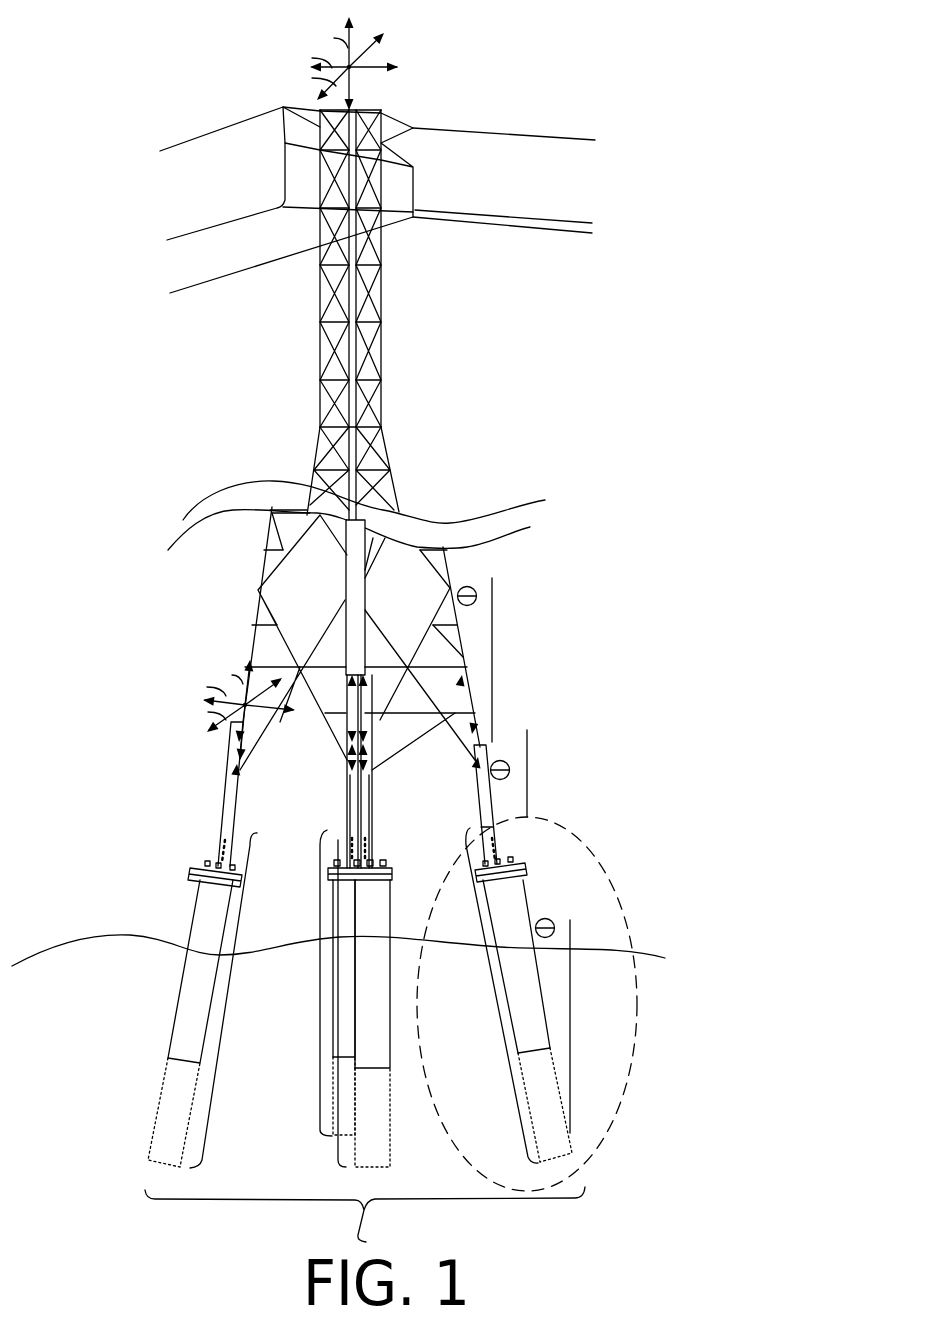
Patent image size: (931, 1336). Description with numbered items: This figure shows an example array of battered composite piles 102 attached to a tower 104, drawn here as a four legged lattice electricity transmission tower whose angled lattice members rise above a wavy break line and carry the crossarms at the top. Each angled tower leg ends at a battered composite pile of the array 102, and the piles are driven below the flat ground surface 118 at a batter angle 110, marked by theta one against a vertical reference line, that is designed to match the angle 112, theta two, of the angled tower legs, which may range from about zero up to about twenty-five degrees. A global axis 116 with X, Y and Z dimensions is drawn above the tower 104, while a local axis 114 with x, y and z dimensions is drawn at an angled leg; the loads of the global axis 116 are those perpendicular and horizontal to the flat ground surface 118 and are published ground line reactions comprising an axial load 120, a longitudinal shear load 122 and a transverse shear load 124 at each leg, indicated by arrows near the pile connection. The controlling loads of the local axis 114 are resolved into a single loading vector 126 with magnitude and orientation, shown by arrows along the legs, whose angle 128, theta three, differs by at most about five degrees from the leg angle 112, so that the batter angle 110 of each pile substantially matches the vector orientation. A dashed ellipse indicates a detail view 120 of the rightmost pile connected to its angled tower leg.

The array of battered composite piles 102 is at (365, 1219).
The tower 104 is at (168, 26).
The batter angle 110 is at (553, 904).
The angle of the angled tower legs 112 is at (480, 566).
The local axis 114 is at (170, 678).
The global axis 116 is at (297, 33).
The flat ground surface 118 is at (102, 936).
The axial load 120 is at (560, 815).
The longitudinal shear load 122 is at (174, 850).
The transverse shear load 124 is at (174, 866).
The single loading vector 126 is at (346, 761).
The angle of the single vector 128 is at (513, 740).